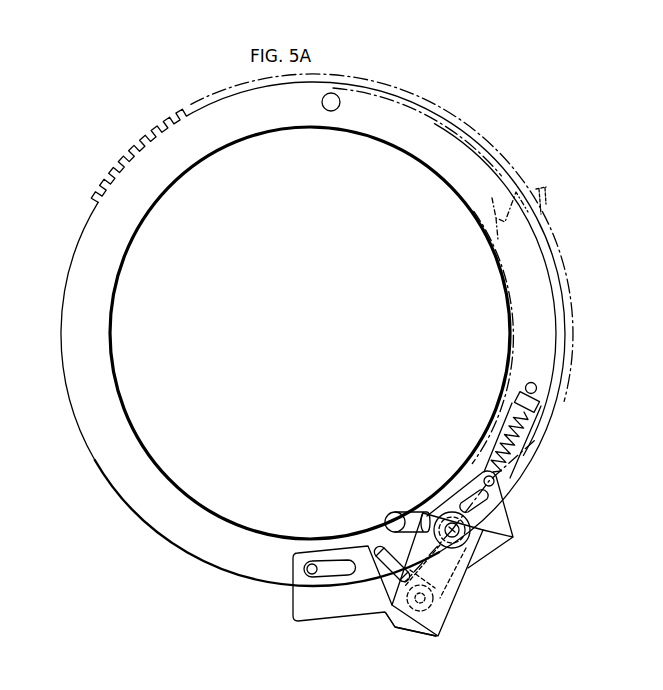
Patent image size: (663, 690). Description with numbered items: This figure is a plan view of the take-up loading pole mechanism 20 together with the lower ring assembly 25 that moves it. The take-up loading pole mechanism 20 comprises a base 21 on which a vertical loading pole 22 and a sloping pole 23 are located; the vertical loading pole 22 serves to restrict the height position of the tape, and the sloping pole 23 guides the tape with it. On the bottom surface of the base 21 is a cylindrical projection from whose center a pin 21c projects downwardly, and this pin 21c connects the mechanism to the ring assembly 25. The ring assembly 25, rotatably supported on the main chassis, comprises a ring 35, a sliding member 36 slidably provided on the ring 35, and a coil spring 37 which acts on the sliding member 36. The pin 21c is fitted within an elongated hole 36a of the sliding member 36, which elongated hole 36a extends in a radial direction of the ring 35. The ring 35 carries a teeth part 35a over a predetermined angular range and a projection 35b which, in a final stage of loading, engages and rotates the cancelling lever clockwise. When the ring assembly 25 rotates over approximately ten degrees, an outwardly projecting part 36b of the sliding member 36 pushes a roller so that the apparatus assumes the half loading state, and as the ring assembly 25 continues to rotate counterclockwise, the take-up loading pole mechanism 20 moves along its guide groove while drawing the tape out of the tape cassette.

The take-up loading pole mechanism 20 is at (476, 578).
The base 21 is at (462, 590).
The pin 21c is at (453, 628).
The vertical loading pole 22 is at (447, 510).
The sloping pole 23 is at (415, 510).
The ring assembly 25 is at (68, 277).
The ring 35 is at (162, 527).
The gear teeth 35a is at (133, 143).
The projection 35b is at (339, 96).
The sliding member 36 is at (502, 540).
The elongated hole 36a is at (386, 566).
The outwardly projecting part 36b is at (405, 627).
The coil spring 37 is at (541, 408).